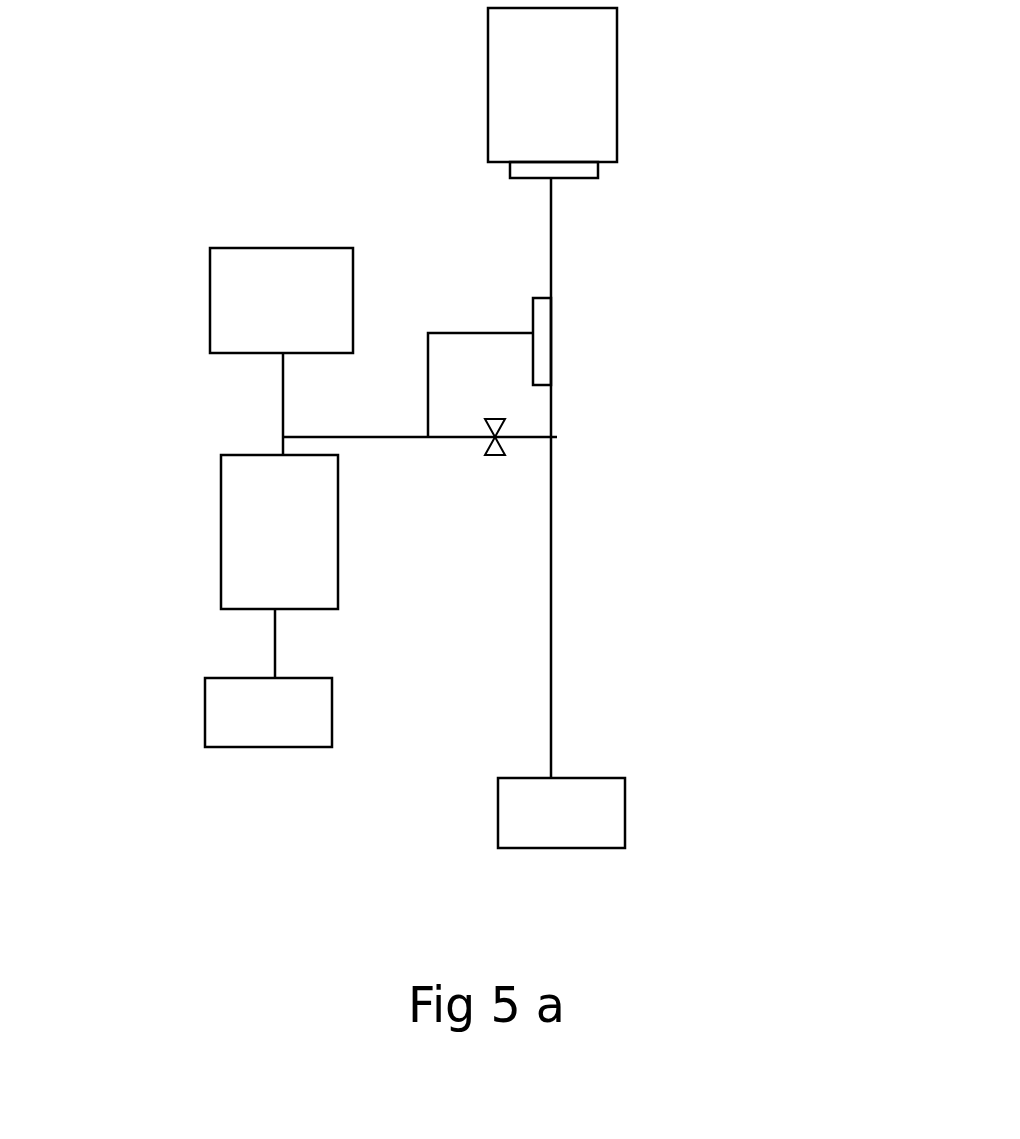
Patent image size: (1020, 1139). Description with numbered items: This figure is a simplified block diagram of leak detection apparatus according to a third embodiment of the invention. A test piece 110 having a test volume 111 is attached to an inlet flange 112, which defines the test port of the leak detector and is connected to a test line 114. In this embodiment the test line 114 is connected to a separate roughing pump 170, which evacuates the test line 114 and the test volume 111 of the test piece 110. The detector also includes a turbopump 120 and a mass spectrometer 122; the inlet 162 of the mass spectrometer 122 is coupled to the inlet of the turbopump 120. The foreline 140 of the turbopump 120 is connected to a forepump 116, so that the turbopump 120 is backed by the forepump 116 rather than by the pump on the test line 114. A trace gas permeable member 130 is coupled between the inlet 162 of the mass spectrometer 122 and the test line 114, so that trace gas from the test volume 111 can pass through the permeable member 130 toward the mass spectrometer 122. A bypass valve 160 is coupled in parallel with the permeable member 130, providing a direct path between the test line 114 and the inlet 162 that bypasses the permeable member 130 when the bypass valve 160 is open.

The test piece 110 is at (470, 58).
The test volume 111 is at (560, 91).
The inlet flange 112 is at (620, 180).
The test line 114 is at (575, 562).
The forepump 116 is at (217, 755).
The turbopump 120 is at (203, 521).
The mass spectrometer 122 is at (192, 295).
The trace gas permeable member 130 is at (571, 331).
The foreline 140 is at (256, 636).
The bypass valve 160 is at (482, 461).
The inlet 162 is at (264, 414).
The roughing pump 170 is at (484, 813).